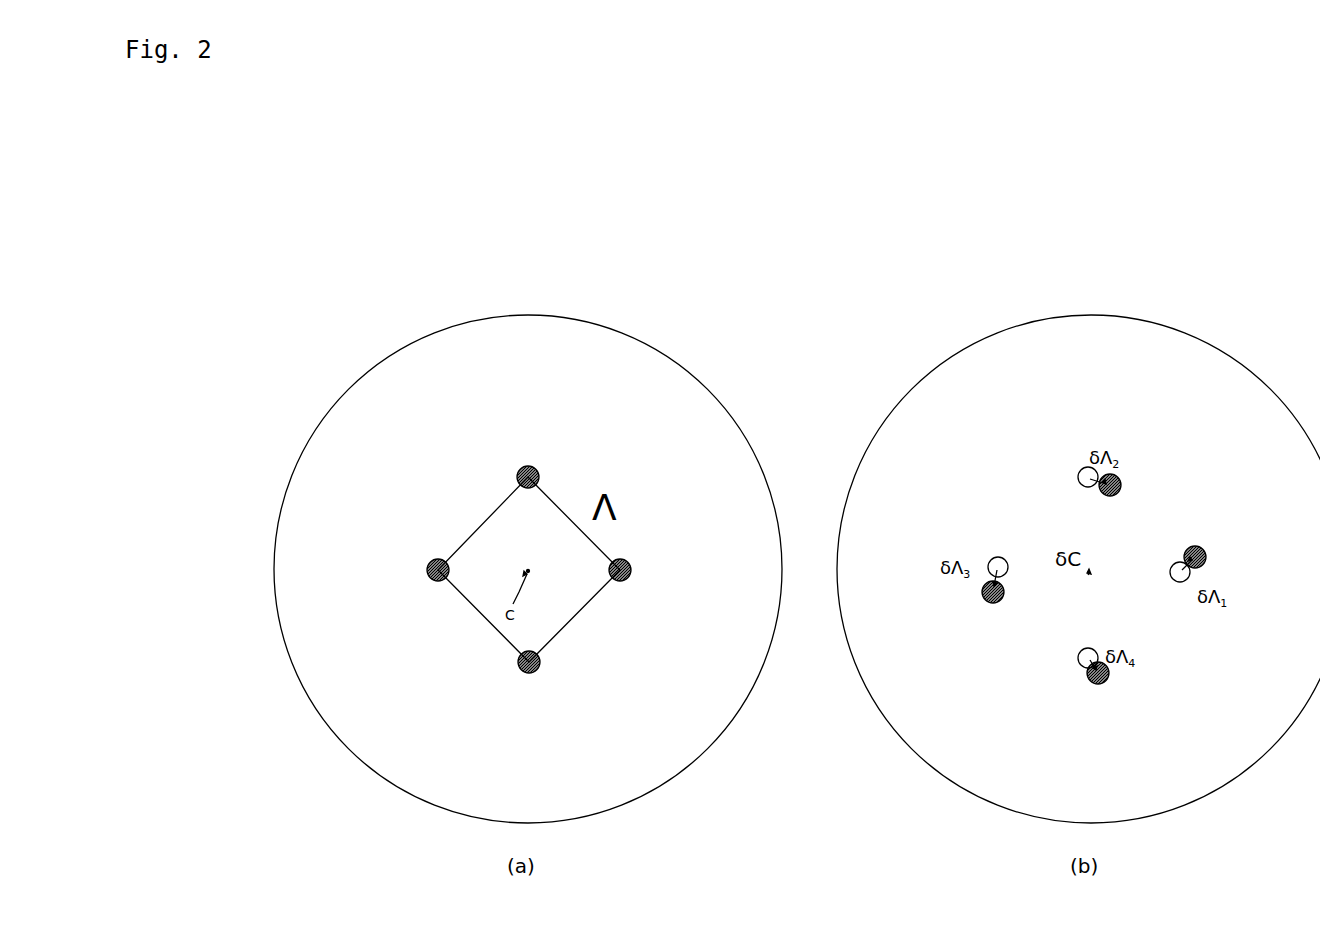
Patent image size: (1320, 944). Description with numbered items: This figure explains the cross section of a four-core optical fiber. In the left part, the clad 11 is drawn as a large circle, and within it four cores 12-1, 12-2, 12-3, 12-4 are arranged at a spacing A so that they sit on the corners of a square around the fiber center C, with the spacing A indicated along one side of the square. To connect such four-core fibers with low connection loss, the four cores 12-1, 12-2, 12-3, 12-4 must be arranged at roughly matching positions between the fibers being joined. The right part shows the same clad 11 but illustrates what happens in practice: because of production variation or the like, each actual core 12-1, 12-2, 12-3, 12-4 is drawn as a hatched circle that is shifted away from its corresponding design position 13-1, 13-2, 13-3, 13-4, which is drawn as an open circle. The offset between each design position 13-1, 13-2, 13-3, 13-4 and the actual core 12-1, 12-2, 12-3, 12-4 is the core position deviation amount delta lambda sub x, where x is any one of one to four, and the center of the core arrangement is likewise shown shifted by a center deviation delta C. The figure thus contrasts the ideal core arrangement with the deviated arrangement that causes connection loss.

The clad 11 is at (646, 342).
The core 12-1 is at (630, 562).
The core 12-2 is at (538, 468).
The core 12-3 is at (430, 561).
The core 12-4 is at (533, 677).
The design position 13-1 is at (1172, 565).
The design position 13-2 is at (1079, 471).
The design position 13-3 is at (1003, 554).
The design position 13-4 is at (1078, 670).